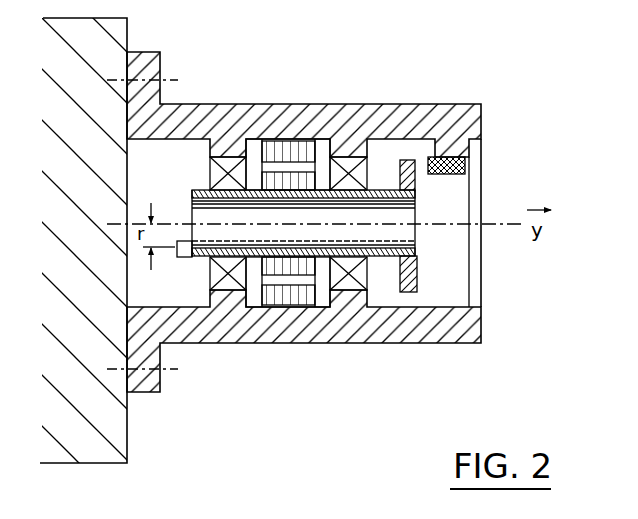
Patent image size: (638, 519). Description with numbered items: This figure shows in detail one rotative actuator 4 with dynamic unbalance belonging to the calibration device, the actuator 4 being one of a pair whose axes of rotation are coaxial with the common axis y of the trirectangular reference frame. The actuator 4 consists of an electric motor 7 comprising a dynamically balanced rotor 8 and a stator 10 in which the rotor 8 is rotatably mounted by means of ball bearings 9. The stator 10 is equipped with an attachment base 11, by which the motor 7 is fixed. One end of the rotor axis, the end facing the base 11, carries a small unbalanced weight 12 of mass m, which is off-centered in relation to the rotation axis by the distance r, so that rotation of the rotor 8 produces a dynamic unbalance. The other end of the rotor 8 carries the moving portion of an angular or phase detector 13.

The rotative actuator 4 is at (489, 101).
The electric motor 7 is at (270, 293).
The rotor 8 is at (376, 249).
The ball bearings 9 is at (220, 181).
The stator 10 is at (264, 328).
The attachment base 11 is at (107, 444).
The unbalanced weight 12 is at (186, 250).
The angular or phase detector 13 is at (413, 183).